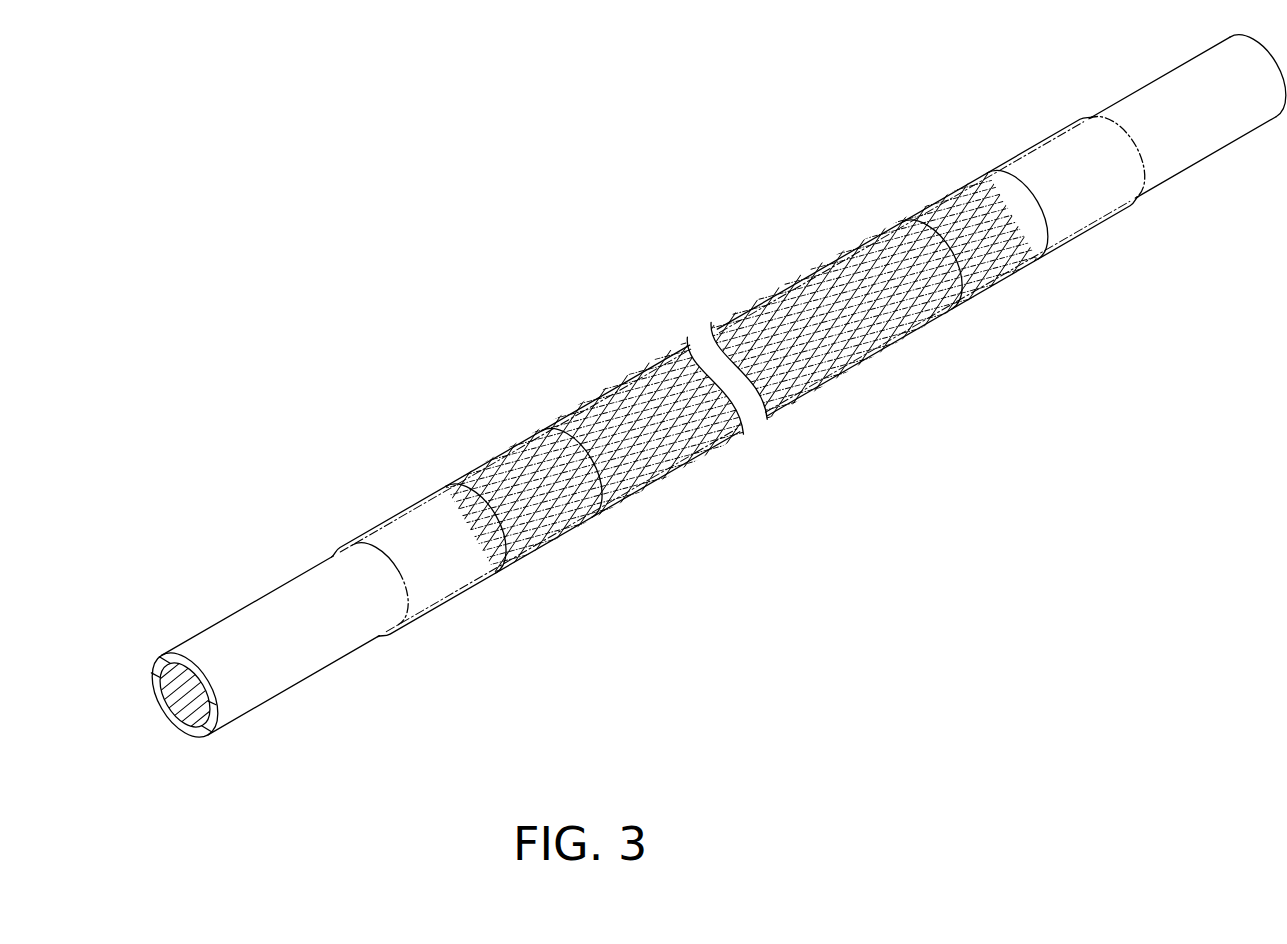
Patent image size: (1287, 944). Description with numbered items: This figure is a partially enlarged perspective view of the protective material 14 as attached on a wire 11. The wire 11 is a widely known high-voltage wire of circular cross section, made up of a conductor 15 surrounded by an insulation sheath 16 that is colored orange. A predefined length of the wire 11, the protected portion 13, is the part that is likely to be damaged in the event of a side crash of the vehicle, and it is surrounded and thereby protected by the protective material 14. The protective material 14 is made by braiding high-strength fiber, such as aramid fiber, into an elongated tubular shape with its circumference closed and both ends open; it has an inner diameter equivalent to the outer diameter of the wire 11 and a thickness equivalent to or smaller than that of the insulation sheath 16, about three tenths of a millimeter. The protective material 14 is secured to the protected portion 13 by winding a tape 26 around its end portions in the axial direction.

The wire 11 is at (268, 608).
The protected portion 13 is at (612, 290).
The protective material 14 is at (663, 440).
The conductor 15 is at (173, 706).
The insulation sheath 16 is at (198, 733).
The tape 26 is at (445, 577).